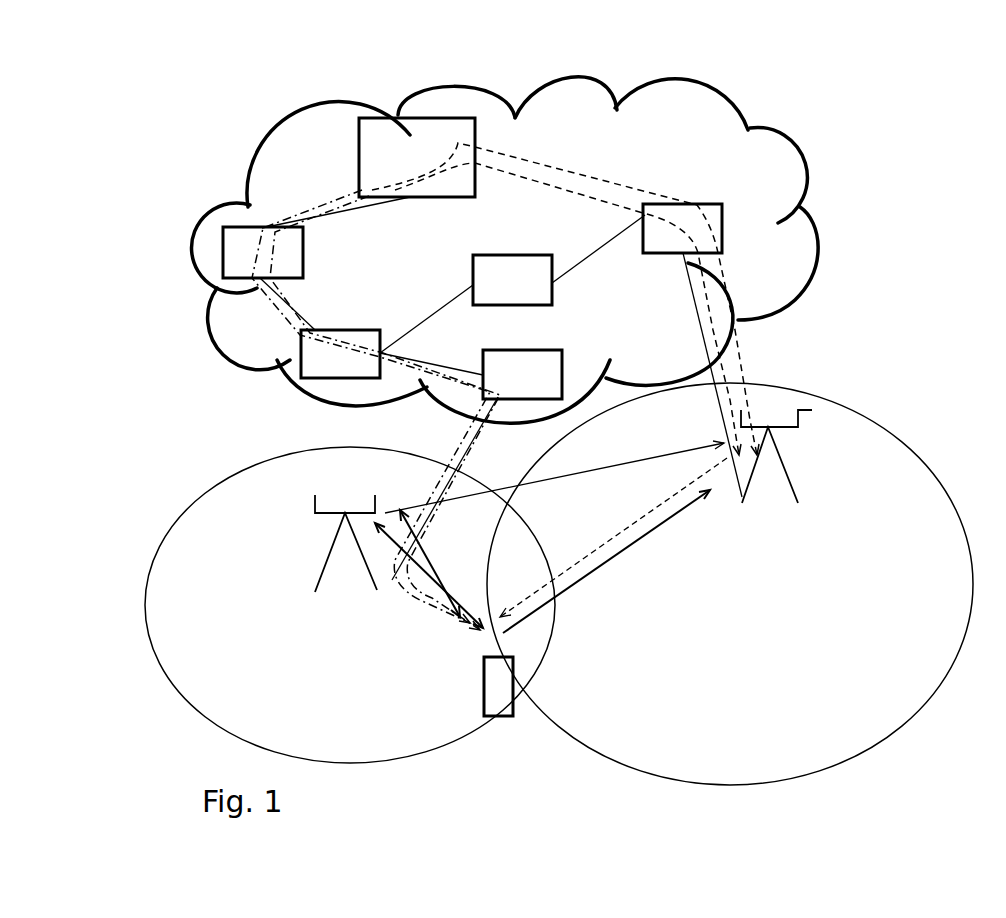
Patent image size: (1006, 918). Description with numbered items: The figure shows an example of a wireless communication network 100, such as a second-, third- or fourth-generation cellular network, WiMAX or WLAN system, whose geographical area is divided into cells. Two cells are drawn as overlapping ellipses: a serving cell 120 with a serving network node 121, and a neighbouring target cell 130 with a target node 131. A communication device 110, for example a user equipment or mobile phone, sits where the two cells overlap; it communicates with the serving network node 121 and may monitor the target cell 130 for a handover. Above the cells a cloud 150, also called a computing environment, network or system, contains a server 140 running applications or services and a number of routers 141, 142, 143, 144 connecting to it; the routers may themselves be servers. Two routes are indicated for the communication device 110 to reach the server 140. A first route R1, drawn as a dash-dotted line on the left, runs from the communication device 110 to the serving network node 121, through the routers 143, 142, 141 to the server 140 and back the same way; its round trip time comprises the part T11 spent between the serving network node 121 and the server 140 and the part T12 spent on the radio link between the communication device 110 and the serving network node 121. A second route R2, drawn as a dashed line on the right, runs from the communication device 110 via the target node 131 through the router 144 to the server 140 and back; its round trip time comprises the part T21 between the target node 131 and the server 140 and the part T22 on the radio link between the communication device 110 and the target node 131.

The wireless communication network 100 is at (722, 680).
The communication device 110 is at (513, 703).
The serving cell 120 is at (266, 669).
The serving network node 121 is at (315, 507).
The target cell 130 is at (820, 587).
The target node 131 is at (813, 412).
The server 140 is at (373, 125).
The router 141 is at (293, 270).
The router 142 is at (352, 343).
The router 143 is at (535, 377).
The router 144 is at (712, 218).
The cloud 150 is at (643, 136).
The first route R1 is at (297, 318).
The second route R2 is at (723, 275).
The first part of first round trip time T11 is at (200, 143).
The second part of first round trip time T12 is at (402, 510).
The first part of second round trip time T21 is at (850, 115).
The second part of second round trip time T22 is at (741, 501).